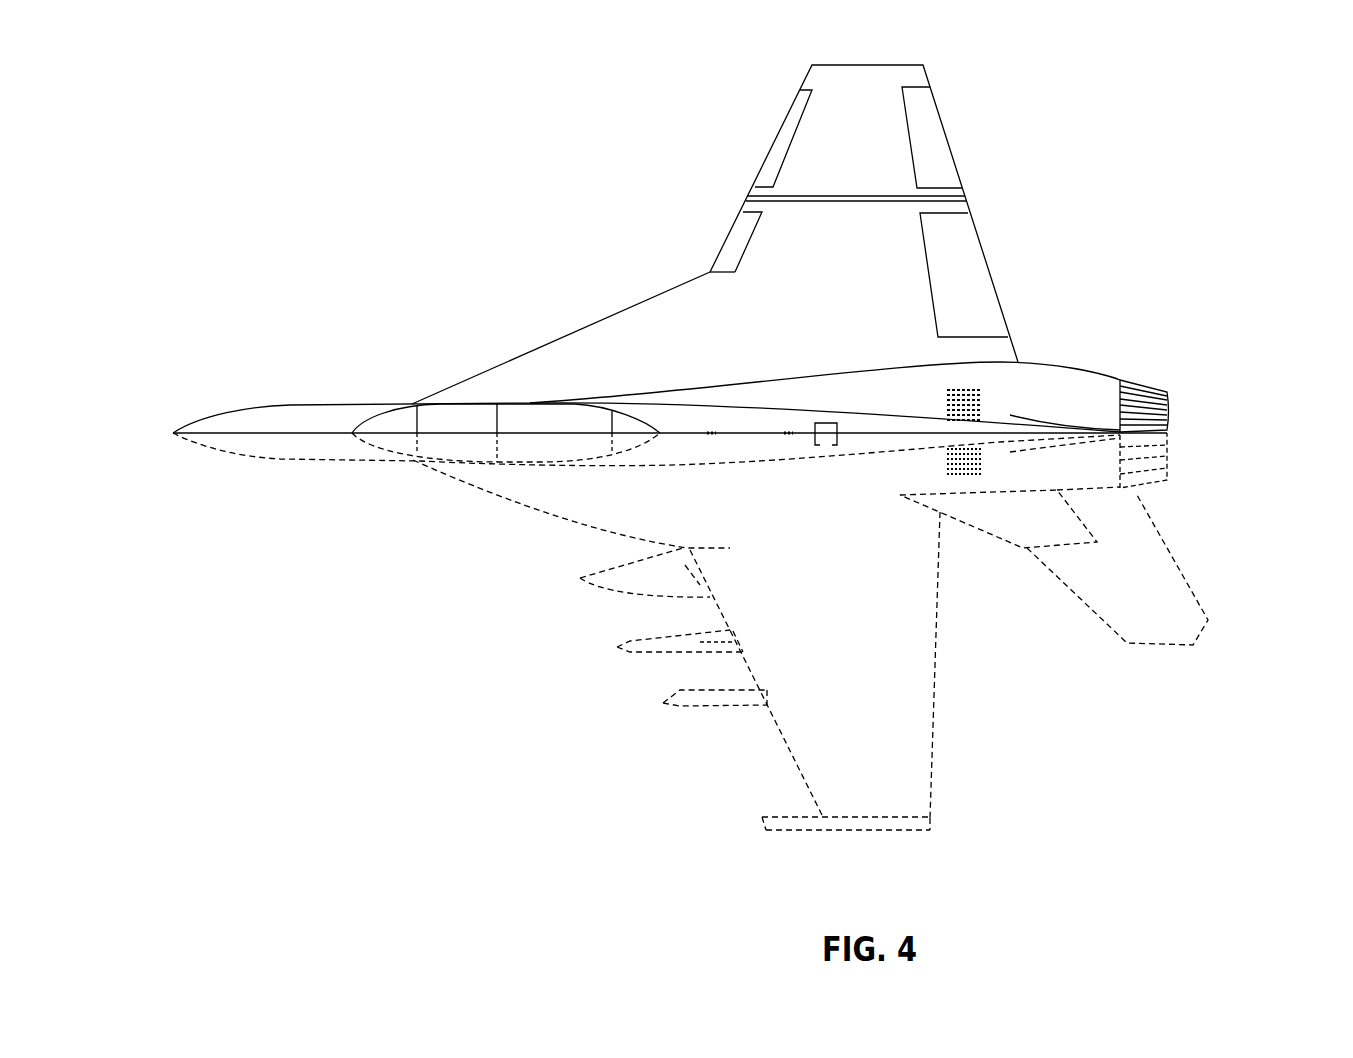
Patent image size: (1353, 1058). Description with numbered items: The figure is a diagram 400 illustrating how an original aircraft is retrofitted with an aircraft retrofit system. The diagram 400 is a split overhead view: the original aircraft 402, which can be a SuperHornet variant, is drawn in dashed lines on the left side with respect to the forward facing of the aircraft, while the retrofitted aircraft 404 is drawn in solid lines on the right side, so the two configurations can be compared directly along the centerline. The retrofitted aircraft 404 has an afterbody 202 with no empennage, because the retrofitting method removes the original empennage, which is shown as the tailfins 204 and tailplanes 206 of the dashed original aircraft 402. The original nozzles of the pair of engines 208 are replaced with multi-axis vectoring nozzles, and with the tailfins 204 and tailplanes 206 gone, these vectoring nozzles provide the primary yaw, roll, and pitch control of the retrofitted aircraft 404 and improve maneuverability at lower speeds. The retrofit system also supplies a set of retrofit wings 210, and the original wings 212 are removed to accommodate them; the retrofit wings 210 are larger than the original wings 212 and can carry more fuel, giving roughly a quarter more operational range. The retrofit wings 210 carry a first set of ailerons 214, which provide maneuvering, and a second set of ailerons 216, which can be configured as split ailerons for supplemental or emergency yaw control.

The diagram 400 is at (261, 81).
The afterbody 202 is at (1209, 416).
The tailfins 204 is at (1187, 570).
The tailplanes 206 is at (1027, 548).
The pair of engines 208 is at (1145, 383).
The retrofit wings 210 is at (770, 157).
The original wings 212 is at (938, 677).
The first set of ailerons 214 is at (977, 270).
The second set of ailerons 216 is at (937, 147).
The original aircraft 402 is at (608, 667).
The retrofitted aircraft 404 is at (596, 273).